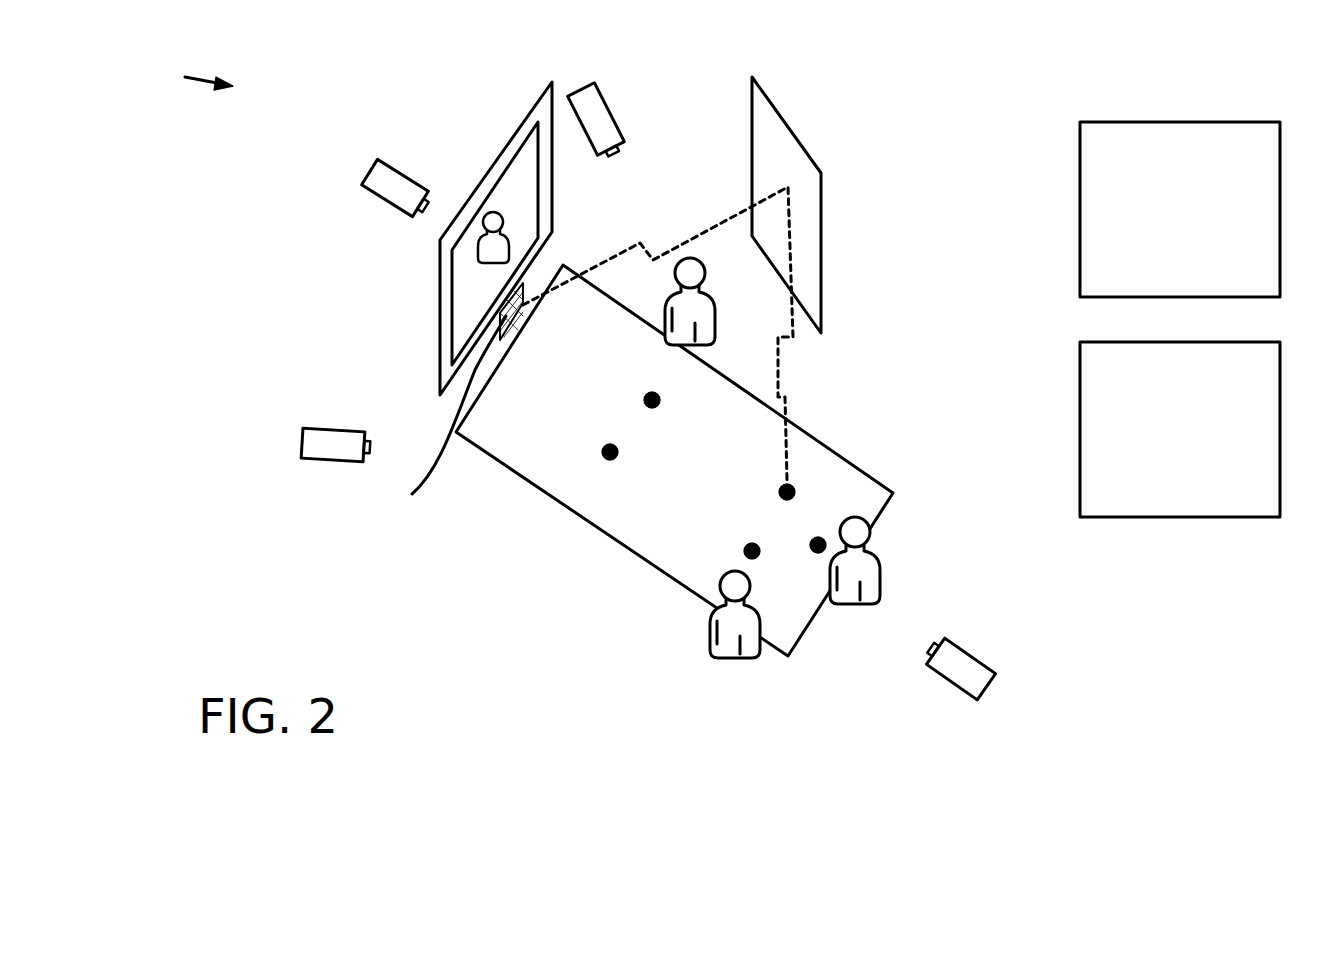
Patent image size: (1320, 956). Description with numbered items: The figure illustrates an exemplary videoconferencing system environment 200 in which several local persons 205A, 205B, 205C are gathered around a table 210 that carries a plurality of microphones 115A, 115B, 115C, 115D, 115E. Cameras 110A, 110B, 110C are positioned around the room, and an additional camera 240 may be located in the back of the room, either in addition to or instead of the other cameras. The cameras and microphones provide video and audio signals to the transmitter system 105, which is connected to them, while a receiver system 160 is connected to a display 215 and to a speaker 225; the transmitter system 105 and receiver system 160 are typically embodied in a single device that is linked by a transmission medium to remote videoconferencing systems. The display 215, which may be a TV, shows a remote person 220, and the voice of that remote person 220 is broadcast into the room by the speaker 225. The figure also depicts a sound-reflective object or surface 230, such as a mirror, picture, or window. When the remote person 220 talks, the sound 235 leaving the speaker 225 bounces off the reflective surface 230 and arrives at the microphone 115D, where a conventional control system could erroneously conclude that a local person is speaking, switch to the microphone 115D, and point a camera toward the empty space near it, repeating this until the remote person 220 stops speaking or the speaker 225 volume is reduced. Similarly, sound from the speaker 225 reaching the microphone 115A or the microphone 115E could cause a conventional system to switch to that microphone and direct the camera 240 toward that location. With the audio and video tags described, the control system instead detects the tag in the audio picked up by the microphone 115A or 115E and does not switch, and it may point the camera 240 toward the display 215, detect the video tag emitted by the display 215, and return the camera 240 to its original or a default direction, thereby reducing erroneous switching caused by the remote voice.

The videoconferencing system environment 200 is at (178, 86).
The transmitter system 105 is at (1185, 138).
The receiver system 160 is at (1183, 516).
The camera 110A is at (372, 162).
The camera 110B is at (303, 440).
The camera 110C is at (586, 96).
The microphone 115A is at (645, 398).
The microphone 115B is at (817, 550).
The microphone 115C is at (745, 551).
The microphone 115D is at (792, 492).
The microphone 115E is at (603, 455).
The person 205A is at (691, 258).
The person 205B is at (880, 580).
The person 205C is at (713, 644).
The table 210 is at (673, 531).
The display 215 is at (503, 158).
The remote person 220 is at (480, 251).
The speaker 225 is at (437, 414).
The sound-reflective surface 230 is at (783, 132).
The reflected sound 235 is at (782, 395).
The camera 240 is at (985, 672).